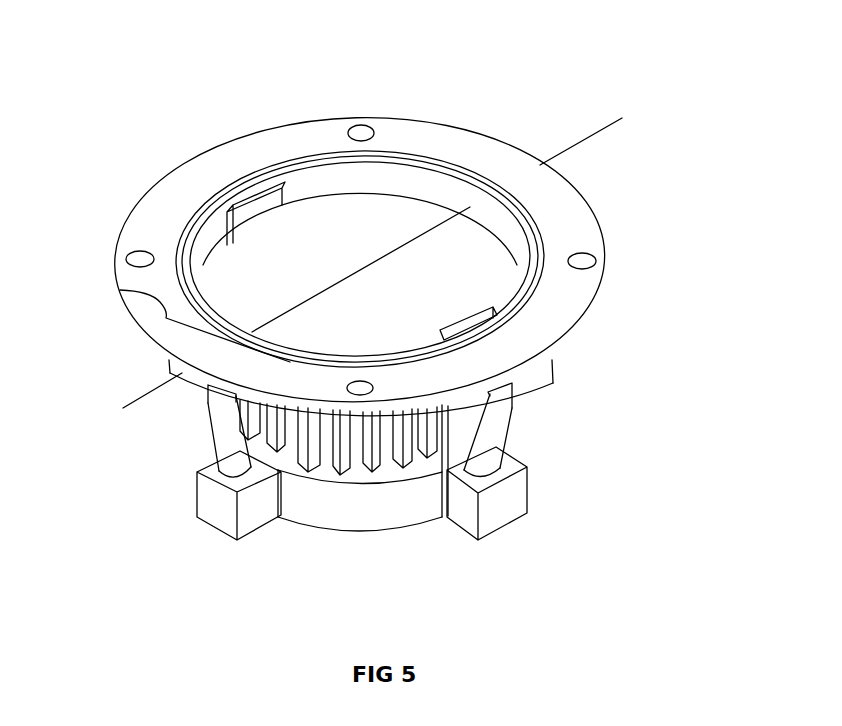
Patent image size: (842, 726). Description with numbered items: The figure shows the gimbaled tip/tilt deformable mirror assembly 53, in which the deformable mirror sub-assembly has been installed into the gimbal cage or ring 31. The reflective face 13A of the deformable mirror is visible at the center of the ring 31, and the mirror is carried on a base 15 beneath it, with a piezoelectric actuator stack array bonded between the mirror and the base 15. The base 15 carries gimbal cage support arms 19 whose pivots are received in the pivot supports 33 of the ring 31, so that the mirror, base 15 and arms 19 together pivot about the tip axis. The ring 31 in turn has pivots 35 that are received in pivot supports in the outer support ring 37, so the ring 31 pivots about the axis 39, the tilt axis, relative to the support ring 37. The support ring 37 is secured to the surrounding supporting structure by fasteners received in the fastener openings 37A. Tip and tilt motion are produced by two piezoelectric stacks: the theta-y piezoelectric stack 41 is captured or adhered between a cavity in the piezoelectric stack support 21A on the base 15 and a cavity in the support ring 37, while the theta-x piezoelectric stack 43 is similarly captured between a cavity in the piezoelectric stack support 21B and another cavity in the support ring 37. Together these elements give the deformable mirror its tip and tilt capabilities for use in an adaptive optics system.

The gimbaled tip/tilt deformable mirror assembly 53 is at (450, 43).
The support ring 37 is at (233, 170).
The fastener openings 37A is at (350, 132).
The pivot supports 33 is at (553, 362).
The gimbal cage 31 is at (340, 175).
The face 13A is at (360, 240).
The gimbal cage support arms 19 is at (260, 212).
The pivots 35 is at (120, 290).
The axis 39 is at (600, 135).
The base 15 is at (357, 512).
The theta-x piezoelectric stack 43 is at (240, 452).
The theta-y piezoelectric stack 41 is at (493, 450).
The piezoelectric stack support 21A is at (503, 508).
The piezoelectric stack support 21B is at (217, 502).